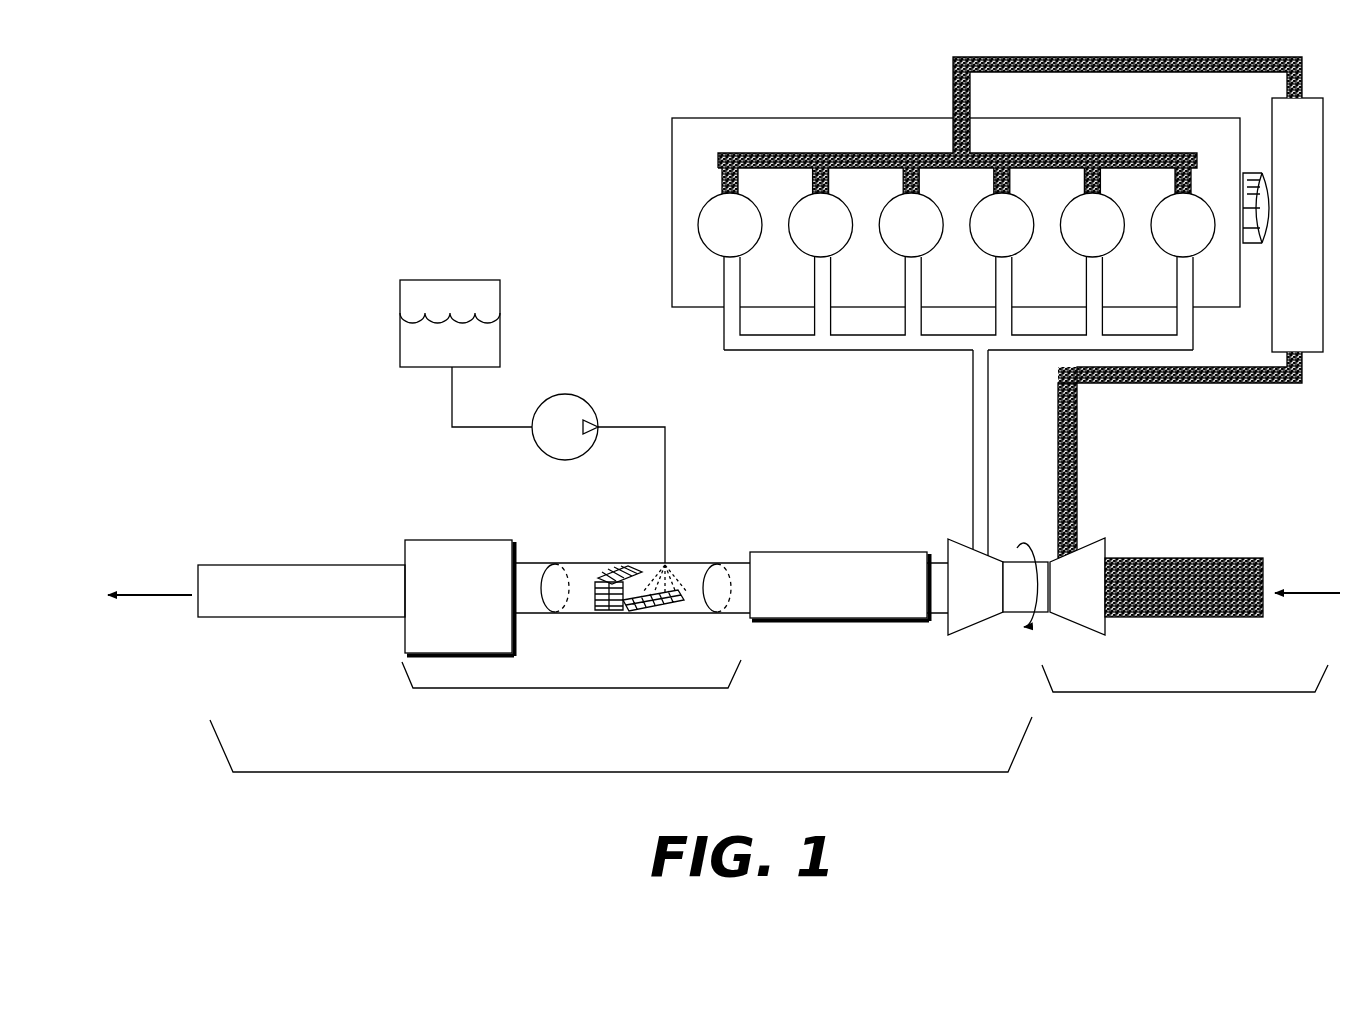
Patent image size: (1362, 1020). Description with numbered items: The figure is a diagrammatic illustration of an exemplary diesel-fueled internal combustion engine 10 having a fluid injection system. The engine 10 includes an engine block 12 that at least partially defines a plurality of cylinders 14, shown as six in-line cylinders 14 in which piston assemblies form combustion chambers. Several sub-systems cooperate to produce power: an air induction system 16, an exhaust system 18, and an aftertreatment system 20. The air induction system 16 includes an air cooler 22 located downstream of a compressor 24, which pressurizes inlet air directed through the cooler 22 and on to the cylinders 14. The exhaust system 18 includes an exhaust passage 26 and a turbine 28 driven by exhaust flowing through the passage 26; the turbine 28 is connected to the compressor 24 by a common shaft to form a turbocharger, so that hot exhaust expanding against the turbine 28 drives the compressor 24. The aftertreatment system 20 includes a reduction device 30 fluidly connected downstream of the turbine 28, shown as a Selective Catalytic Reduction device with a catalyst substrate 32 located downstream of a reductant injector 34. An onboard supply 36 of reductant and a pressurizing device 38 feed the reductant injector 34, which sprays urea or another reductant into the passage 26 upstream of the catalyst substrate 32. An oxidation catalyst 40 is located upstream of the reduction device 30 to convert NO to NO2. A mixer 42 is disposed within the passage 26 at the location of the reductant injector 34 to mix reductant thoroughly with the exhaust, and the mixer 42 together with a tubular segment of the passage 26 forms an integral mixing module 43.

The engine 10 is at (583, 187).
The engine block 12 is at (740, 122).
The cylinders 14 is at (721, 238).
The air induction system 16 is at (1207, 692).
The exhaust system 18 is at (493, 772).
The aftertreatment system 20 is at (242, 417).
The air cooler 22 is at (1288, 212).
The compressor 24 is at (1108, 553).
The exhaust passage 26 is at (982, 388).
The turbine 28 is at (975, 625).
The reduction device 30 is at (578, 688).
The catalyst substrate 32 is at (448, 603).
The reductant injector 34 is at (663, 563).
The onboard supply of reductant 36 is at (439, 353).
The pressurizing device 38 is at (554, 438).
The oxidation catalyst 40 is at (829, 601).
The mixer 42 is at (608, 603).
The mixing module 43 is at (720, 624).